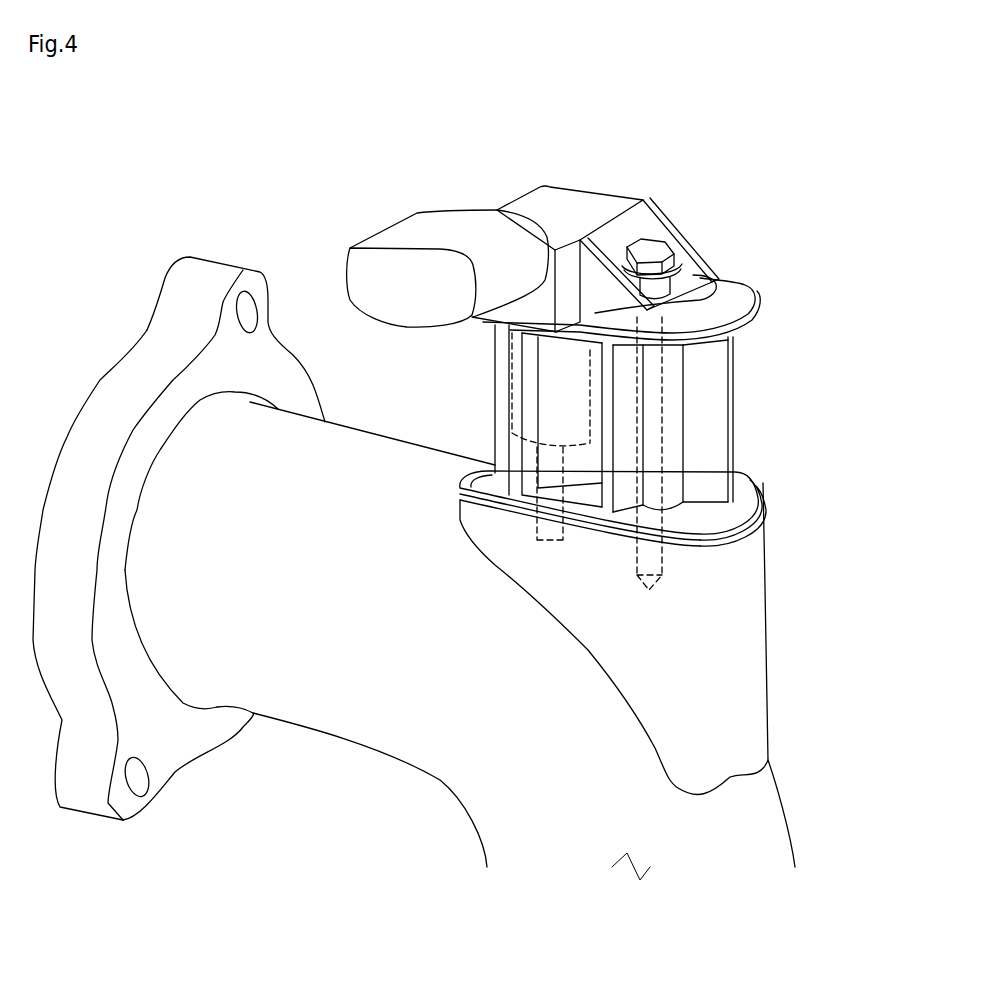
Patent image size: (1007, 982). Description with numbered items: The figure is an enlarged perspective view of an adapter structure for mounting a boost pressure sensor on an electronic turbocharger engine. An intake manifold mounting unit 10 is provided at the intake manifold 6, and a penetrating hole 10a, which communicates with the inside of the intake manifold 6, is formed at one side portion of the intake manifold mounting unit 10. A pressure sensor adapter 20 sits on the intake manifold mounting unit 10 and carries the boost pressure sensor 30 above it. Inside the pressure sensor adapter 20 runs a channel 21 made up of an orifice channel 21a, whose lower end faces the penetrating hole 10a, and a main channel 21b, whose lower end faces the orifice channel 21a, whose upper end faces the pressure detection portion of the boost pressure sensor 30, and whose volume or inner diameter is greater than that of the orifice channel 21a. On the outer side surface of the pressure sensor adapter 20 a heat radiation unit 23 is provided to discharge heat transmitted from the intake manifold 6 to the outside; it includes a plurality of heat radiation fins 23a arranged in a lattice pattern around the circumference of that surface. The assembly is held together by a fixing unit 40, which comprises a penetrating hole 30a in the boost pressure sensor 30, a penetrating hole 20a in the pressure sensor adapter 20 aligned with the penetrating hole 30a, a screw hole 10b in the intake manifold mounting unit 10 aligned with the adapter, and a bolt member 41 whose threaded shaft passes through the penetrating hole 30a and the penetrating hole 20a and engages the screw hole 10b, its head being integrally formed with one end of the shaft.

The intake manifold 6 is at (385, 740).
The intake manifold mounting unit 10 is at (772, 593).
The penetrating hole 10a is at (552, 533).
The screw hole 10b is at (651, 562).
The pressure sensor adapter 20 is at (749, 448).
The penetrating hole 20a is at (653, 395).
The channel 21 is at (333, 496).
The orifice channel 21a is at (488, 471).
The main channel 21b is at (508, 400).
The heat radiation unit 23 is at (747, 357).
The heat radiation fins 23a is at (760, 492).
The boost pressure sensor 30 is at (580, 190).
The penetrating hole 30a is at (698, 271).
The fixing unit 40 is at (706, 233).
The bolt member 41 is at (653, 247).